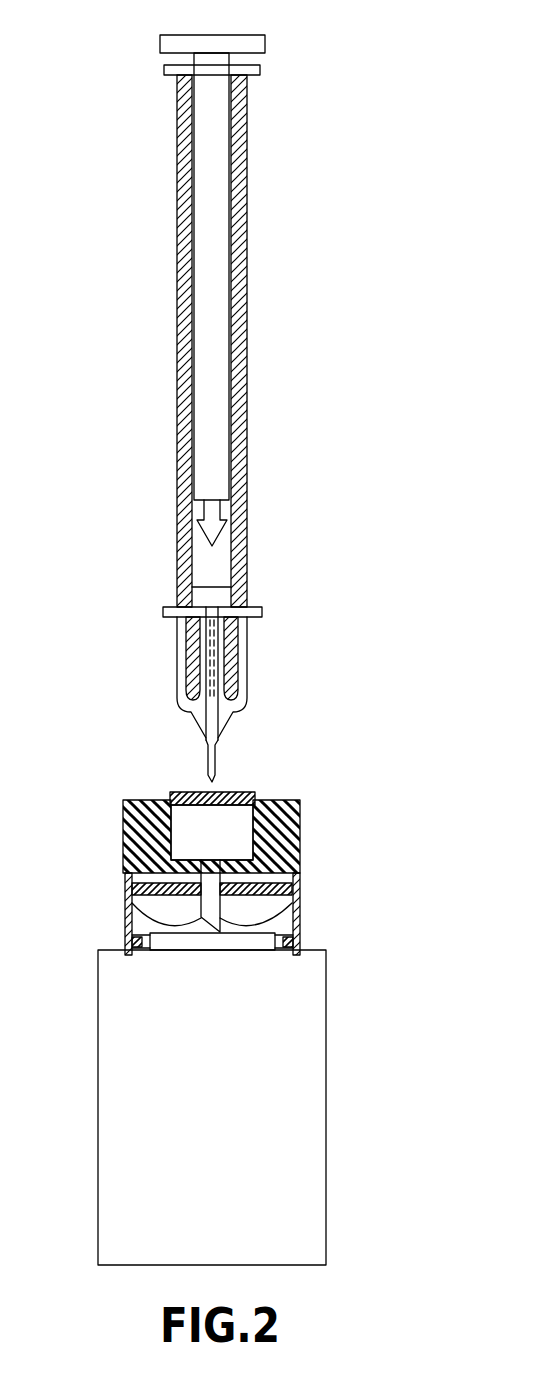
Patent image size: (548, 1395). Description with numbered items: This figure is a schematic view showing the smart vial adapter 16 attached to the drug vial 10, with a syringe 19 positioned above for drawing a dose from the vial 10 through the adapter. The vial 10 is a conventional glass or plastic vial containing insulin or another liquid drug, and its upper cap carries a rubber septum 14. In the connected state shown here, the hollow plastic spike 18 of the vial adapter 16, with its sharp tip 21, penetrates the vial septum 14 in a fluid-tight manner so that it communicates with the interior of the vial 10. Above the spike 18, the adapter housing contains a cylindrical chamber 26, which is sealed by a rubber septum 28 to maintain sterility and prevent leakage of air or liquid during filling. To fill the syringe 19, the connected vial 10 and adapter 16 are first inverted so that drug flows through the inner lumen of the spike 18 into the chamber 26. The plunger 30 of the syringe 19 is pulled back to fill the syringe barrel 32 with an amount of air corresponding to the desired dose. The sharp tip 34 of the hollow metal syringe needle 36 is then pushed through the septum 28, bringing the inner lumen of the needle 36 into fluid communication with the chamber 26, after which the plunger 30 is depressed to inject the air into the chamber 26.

The drug vial 10 is at (344, 1055).
The rubber septum 14 is at (300, 884).
The smart vial adapter 16 is at (108, 836).
The spike 18 is at (300, 920).
The syringe 19 is at (267, 330).
The sharp tip 21 is at (132, 917).
The cylindrical chamber 26 is at (240, 838).
The rubber septum 28 is at (175, 792).
The plunger 30 is at (267, 43).
The syringe barrel 32 is at (178, 474).
The sharp tip 34 is at (216, 781).
The syringe needle 36 is at (219, 736).